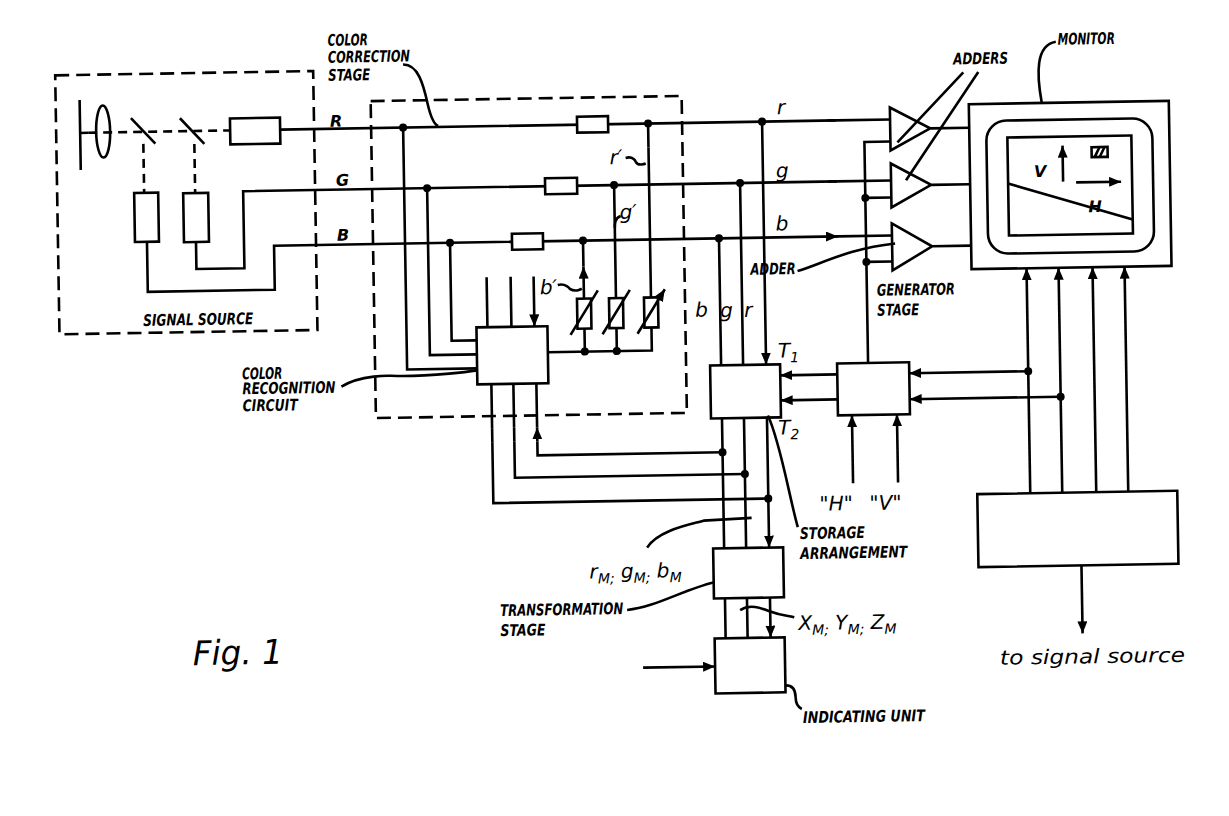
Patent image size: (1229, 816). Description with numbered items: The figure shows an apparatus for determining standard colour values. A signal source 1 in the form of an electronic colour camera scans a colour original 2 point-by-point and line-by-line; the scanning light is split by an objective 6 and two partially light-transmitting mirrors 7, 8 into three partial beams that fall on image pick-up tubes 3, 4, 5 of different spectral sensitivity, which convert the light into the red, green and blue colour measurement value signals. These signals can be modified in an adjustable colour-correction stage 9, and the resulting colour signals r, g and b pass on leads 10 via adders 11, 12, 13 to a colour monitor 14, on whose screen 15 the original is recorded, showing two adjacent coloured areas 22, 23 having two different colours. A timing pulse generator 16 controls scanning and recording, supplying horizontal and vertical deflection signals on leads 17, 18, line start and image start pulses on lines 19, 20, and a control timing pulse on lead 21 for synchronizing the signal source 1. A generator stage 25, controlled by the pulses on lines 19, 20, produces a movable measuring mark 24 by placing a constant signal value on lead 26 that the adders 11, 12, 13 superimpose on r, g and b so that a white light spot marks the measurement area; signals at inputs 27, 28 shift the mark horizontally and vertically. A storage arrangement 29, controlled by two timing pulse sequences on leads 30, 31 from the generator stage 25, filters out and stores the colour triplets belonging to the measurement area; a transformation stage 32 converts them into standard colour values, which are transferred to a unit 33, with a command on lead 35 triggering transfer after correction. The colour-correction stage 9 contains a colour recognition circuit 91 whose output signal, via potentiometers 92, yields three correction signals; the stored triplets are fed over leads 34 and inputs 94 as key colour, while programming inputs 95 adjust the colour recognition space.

The signal source 1 is at (118, 325).
The colour original 2 is at (89, 94).
The image pick-up tube 3 is at (260, 112).
The image pick-up tube 4 is at (135, 218).
The image pick-up tube 5 is at (202, 205).
The objective 6 is at (106, 149).
The partially light-transmitting mirror 7 is at (140, 113).
The partially light-transmitting mirror 8 is at (188, 114).
The colour-correction stage 9 is at (482, 97).
The leads 10 is at (810, 232).
The adder 11 is at (902, 127).
The adder 12 is at (910, 194).
The adder 13 is at (910, 252).
The colour monitor 14 is at (991, 276).
The screen 15 is at (1148, 142).
The timing pulse generator 16 is at (1174, 544).
The lead 17 is at (1125, 370).
The lead 18 is at (1093, 462).
The line 19 is at (1027, 438).
The line 20 is at (1059, 473).
The lead 21 is at (1077, 606).
The coloured area 22 is at (1042, 157).
The coloured area 23 is at (1114, 232).
The measuring mark 24 is at (1097, 155).
The generator stage 25 is at (880, 367).
The lead 26 is at (867, 300).
The input 27 is at (850, 470).
The input 28 is at (895, 461).
The storage arrangement 29 is at (710, 417).
The lead 30 is at (822, 376).
The lead 31 is at (821, 404).
The transformation stage 32 is at (779, 585).
The unit 33 is at (779, 672).
The leads 34 is at (575, 452).
The lead 35 is at (657, 667).
The colour recognition circuit 91 is at (547, 372).
The potentiometers 92 is at (584, 330).
The inputs 94 is at (508, 400).
The programming inputs 95 is at (522, 292).